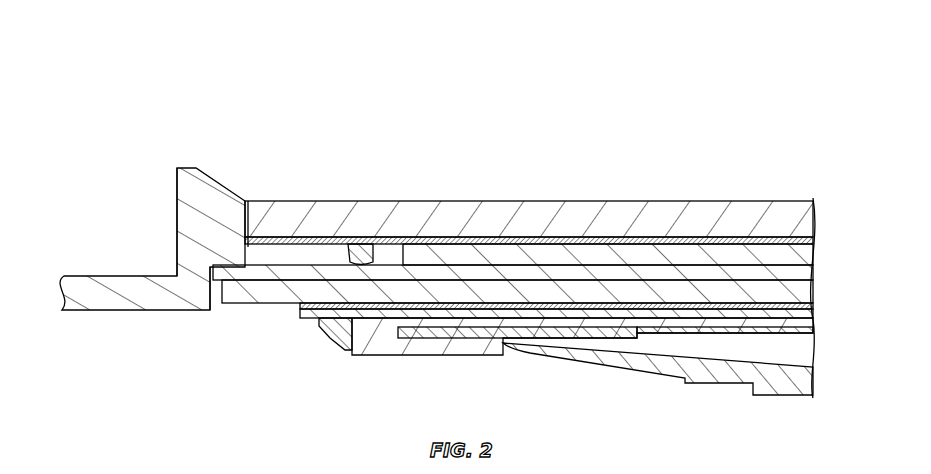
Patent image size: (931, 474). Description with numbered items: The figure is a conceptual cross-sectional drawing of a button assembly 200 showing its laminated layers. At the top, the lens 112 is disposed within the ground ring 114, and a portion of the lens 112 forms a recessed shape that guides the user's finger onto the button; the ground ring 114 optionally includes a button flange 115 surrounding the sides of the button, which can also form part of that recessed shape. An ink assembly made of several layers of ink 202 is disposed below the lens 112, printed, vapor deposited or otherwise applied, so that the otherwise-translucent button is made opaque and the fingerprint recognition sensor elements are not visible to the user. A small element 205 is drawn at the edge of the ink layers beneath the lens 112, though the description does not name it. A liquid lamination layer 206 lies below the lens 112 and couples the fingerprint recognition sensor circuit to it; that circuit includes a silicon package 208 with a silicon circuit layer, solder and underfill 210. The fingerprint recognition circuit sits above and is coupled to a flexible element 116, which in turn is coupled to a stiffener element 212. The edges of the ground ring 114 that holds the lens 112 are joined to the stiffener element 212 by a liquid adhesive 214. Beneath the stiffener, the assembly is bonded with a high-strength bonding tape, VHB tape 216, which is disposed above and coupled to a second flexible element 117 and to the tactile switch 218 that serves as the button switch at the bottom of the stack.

The button assembly 200 is at (248, 46).
The ground ring 114 is at (152, 224).
The button flange 115 is at (177, 210).
The lens 112 is at (559, 213).
The ink 202 is at (534, 225).
The adhesive bead 205 is at (364, 239).
The liquid lamination layer 206 is at (815, 241).
The silicon package 208 is at (815, 254).
The flexible element 116 is at (815, 272).
The stiffener element 212 is at (815, 290).
The flexible element 117 is at (815, 308).
The VHB tape 216 is at (697, 333).
The underfill 210 is at (334, 344).
The liquid adhesive 214 is at (216, 292).
The tactile switch 218 is at (811, 381).